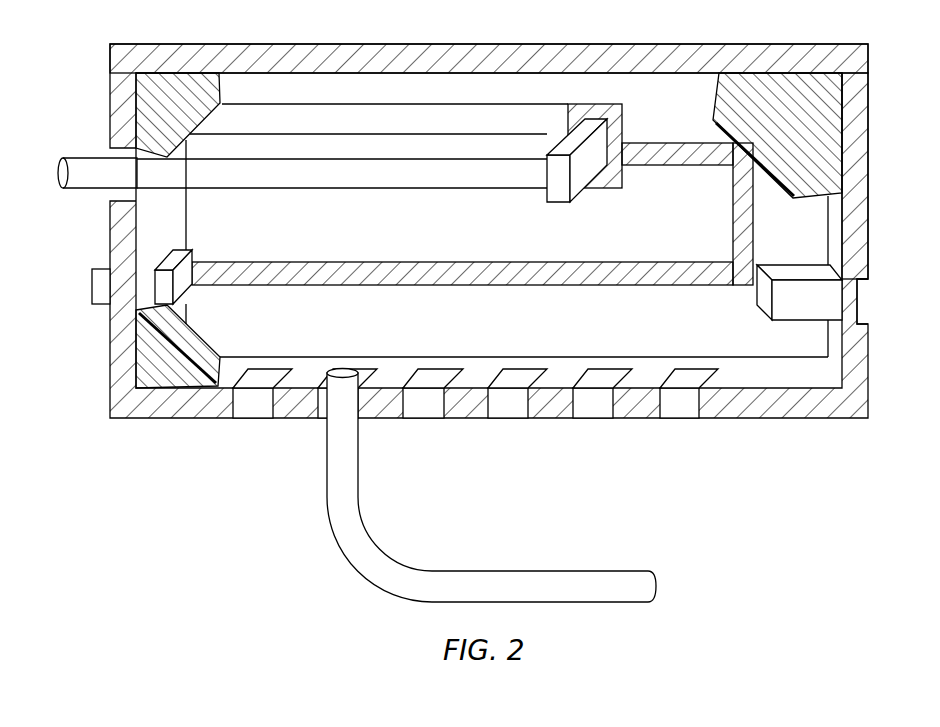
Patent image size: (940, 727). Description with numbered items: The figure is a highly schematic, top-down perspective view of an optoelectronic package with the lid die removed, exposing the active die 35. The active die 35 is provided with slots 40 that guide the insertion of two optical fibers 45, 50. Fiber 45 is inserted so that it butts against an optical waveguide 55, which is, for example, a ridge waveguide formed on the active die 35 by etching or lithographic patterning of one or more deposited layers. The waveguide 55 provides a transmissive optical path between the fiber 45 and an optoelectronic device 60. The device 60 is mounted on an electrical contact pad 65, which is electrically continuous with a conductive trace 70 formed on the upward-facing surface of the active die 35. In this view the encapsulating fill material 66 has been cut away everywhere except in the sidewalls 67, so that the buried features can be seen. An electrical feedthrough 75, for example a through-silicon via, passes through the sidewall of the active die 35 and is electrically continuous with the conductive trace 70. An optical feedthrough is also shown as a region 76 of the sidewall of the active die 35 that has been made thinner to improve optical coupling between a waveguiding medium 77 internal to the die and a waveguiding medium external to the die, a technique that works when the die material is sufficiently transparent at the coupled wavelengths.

The active die 35 is at (868, 347).
The slots 40 is at (578, 422).
The fiber 45 is at (82, 158).
The fiber 50 is at (638, 571).
The optical waveguide 55 is at (366, 188).
The optoelectronic device 60 is at (560, 202).
The electrical contact pad 65 is at (600, 188).
The encapsulating fill material 66 is at (176, 102).
The sidewalls 67 is at (150, 44).
The conductive trace 70 is at (733, 210).
The electrical feedthrough 75 is at (92, 288).
The thinned sidewall region 76 is at (857, 303).
The waveguiding medium 77 is at (760, 305).